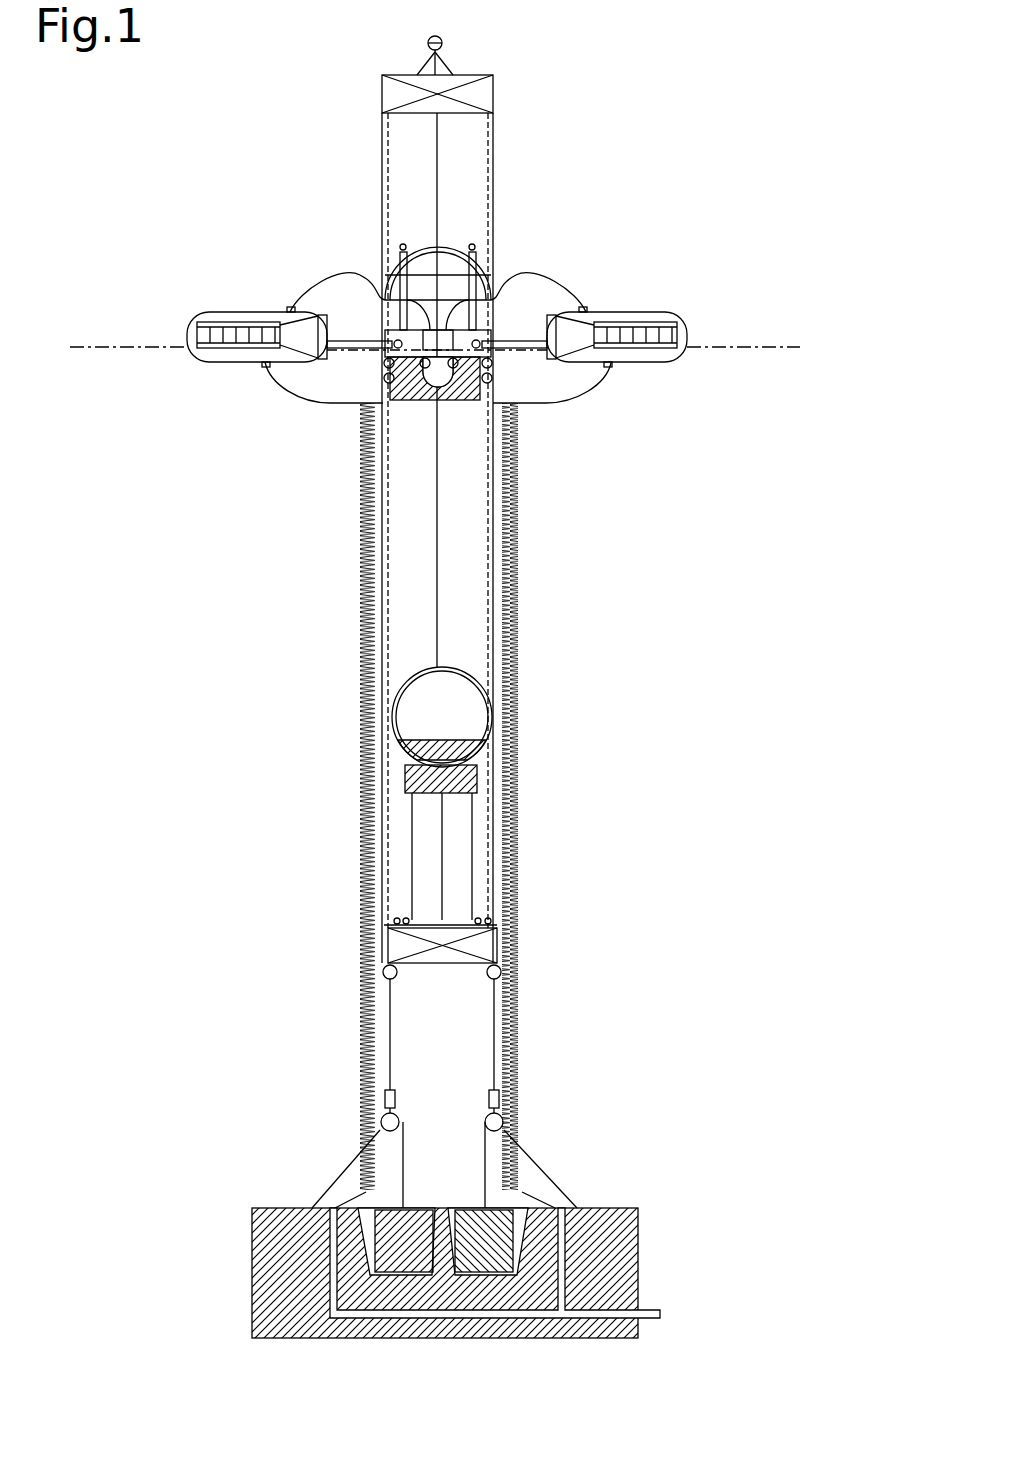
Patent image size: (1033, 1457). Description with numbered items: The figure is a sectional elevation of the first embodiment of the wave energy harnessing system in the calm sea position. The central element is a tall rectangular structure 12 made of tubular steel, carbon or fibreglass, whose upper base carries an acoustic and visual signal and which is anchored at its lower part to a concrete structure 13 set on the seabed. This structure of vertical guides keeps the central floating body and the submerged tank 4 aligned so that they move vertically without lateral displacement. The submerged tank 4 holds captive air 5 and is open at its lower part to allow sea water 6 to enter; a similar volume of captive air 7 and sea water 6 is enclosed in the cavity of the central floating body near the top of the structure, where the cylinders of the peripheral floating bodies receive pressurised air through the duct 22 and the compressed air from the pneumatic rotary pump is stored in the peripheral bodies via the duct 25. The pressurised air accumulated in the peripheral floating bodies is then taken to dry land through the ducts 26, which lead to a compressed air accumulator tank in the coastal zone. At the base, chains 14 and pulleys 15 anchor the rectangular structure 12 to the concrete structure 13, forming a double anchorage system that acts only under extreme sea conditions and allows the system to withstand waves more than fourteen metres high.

The submerged tank 4 is at (478, 677).
The captive air 5 is at (440, 702).
The sea water 6 is at (465, 393).
The captive air 7 is at (437, 288).
The rectangular structure 12 is at (493, 178).
The concrete structure 13 is at (600, 1240).
The chains 14 is at (390, 1046).
The pulleys 15 is at (503, 1112).
The duct 22 is at (500, 350).
The duct 25 is at (551, 291).
The ducts 26 is at (365, 995).